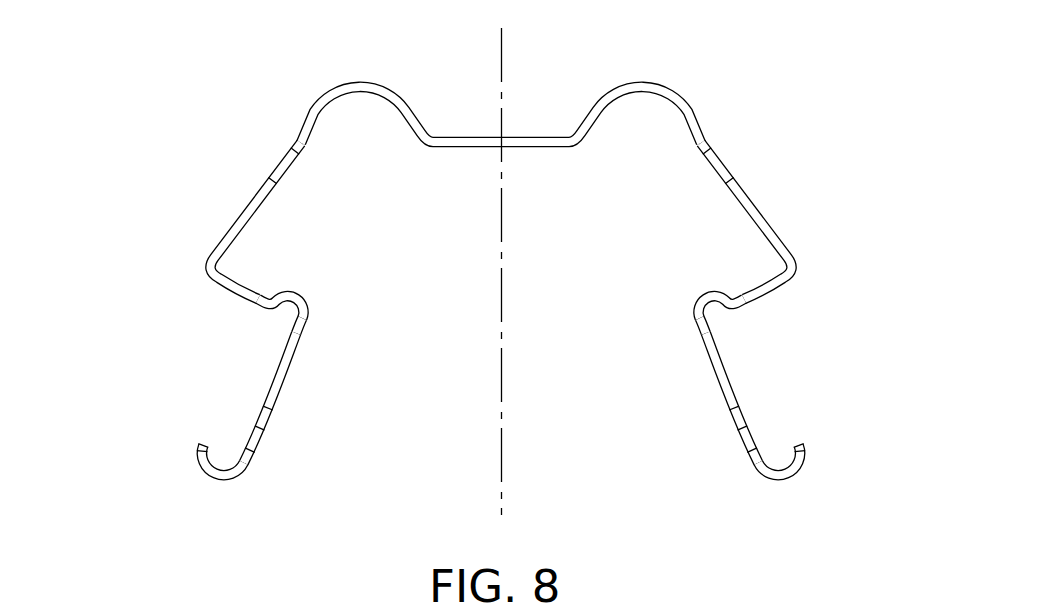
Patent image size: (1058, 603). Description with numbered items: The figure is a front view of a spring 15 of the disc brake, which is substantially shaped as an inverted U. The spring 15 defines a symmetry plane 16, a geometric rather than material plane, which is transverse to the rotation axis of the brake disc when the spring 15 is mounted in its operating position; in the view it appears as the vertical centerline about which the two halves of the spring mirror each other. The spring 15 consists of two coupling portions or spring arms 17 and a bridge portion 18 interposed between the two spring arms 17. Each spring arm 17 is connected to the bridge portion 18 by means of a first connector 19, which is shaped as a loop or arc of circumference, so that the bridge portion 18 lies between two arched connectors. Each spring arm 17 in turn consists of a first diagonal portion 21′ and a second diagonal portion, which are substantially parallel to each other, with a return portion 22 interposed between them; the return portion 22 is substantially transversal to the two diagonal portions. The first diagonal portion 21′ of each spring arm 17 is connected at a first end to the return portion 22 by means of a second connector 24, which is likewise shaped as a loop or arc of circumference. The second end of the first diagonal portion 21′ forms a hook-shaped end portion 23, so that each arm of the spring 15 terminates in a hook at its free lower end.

The spring 15 is at (503, 297).
The symmetry plane 16 is at (502, 58).
The coupling portion or spring arm 17 is at (172, 314).
The bridge portion 18 is at (469, 117).
The first connector 19 is at (335, 88).
The first diagonal portion 21′ is at (735, 182).
The return portion 22 is at (237, 300).
The hook-shaped end portion 23 is at (222, 478).
The second connector 24 is at (306, 303).